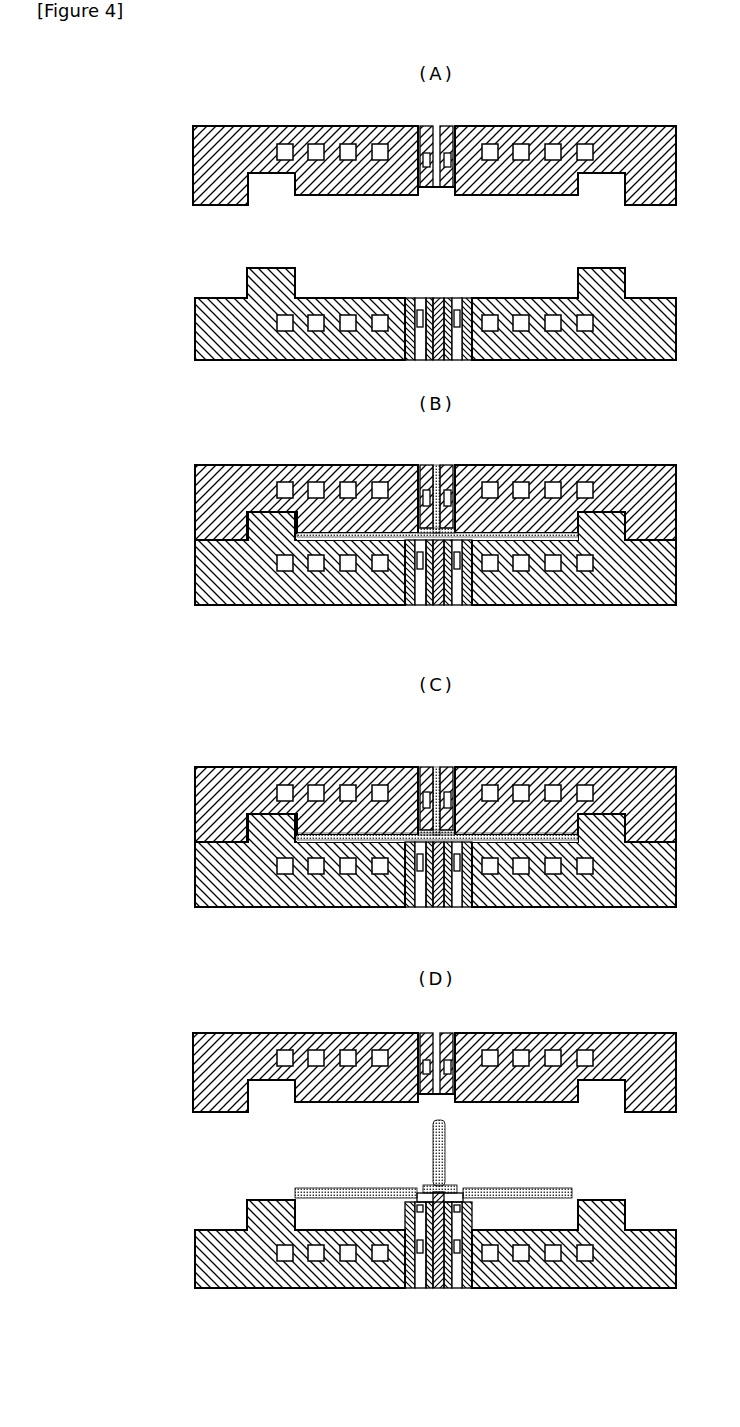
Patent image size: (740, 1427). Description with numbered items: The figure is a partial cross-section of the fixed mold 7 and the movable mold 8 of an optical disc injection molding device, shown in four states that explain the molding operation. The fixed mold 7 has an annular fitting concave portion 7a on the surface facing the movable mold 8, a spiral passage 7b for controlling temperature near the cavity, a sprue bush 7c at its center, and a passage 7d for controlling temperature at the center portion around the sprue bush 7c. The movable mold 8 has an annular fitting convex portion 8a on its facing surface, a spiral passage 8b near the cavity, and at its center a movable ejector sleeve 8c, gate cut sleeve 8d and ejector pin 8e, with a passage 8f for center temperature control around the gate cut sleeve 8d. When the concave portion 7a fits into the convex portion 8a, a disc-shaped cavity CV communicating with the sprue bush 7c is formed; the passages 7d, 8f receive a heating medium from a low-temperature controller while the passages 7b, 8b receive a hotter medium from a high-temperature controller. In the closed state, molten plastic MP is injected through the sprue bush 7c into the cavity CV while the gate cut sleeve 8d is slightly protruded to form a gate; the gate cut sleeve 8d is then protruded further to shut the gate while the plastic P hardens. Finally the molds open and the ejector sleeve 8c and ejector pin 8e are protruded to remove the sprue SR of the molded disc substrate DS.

The fixed mold 7 is at (193, 153).
The annular fitting concave portion 7a is at (270, 176).
The spiral passage 7b is at (350, 146).
The sprue bush 7c is at (448, 155).
The passage 7d is at (424, 154).
The movable mold 8 is at (195, 338).
The annular fitting convex portion 8a is at (268, 278).
The spiral passage 8b is at (350, 314).
The ejector sleeve 8c is at (413, 302).
The gate cut sleeve 8d is at (457, 302).
The ejector pin 8e is at (438, 300).
The passage 8f is at (405, 305).
The cavity CV is at (297, 539).
The molding material MP is at (437, 468).
The plastic P is at (510, 833).
The disc substrate DS is at (350, 1188).
The sprue SR is at (446, 1147).